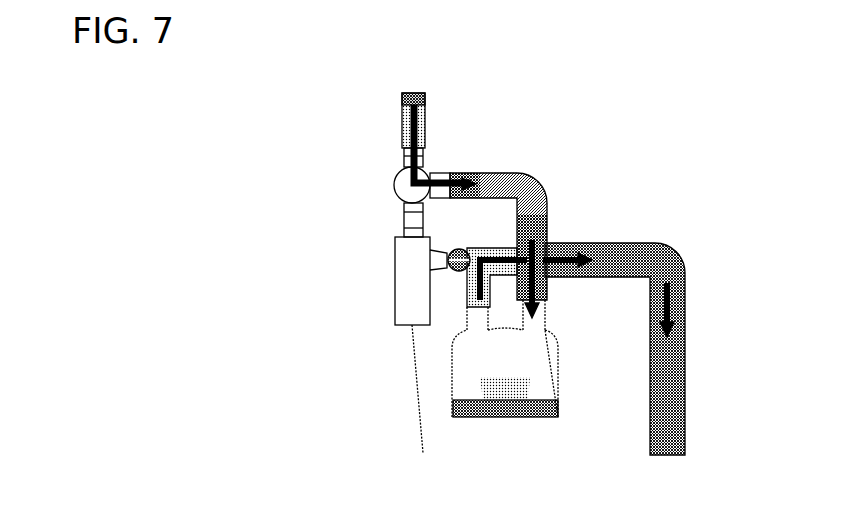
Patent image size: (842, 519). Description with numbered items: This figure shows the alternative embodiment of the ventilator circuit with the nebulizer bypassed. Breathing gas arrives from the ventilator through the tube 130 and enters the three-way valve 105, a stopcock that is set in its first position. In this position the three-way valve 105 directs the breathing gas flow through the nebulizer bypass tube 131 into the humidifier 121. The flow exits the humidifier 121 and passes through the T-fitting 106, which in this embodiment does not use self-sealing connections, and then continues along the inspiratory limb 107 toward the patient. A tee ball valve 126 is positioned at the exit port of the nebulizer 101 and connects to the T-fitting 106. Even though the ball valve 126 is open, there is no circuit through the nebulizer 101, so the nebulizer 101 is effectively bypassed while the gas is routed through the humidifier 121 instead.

The tube from three-way valve to the ventilator 130 is at (400, 128).
The three-way valve 105 is at (393, 186).
The nebulizer bypass tube 131 is at (528, 172).
The inspiratory limb 107 is at (677, 252).
The T-fitting 106 is at (487, 245).
The tee ball valve 126 is at (470, 232).
The nebulizer 101 is at (395, 268).
The humidifier 121 is at (452, 378).